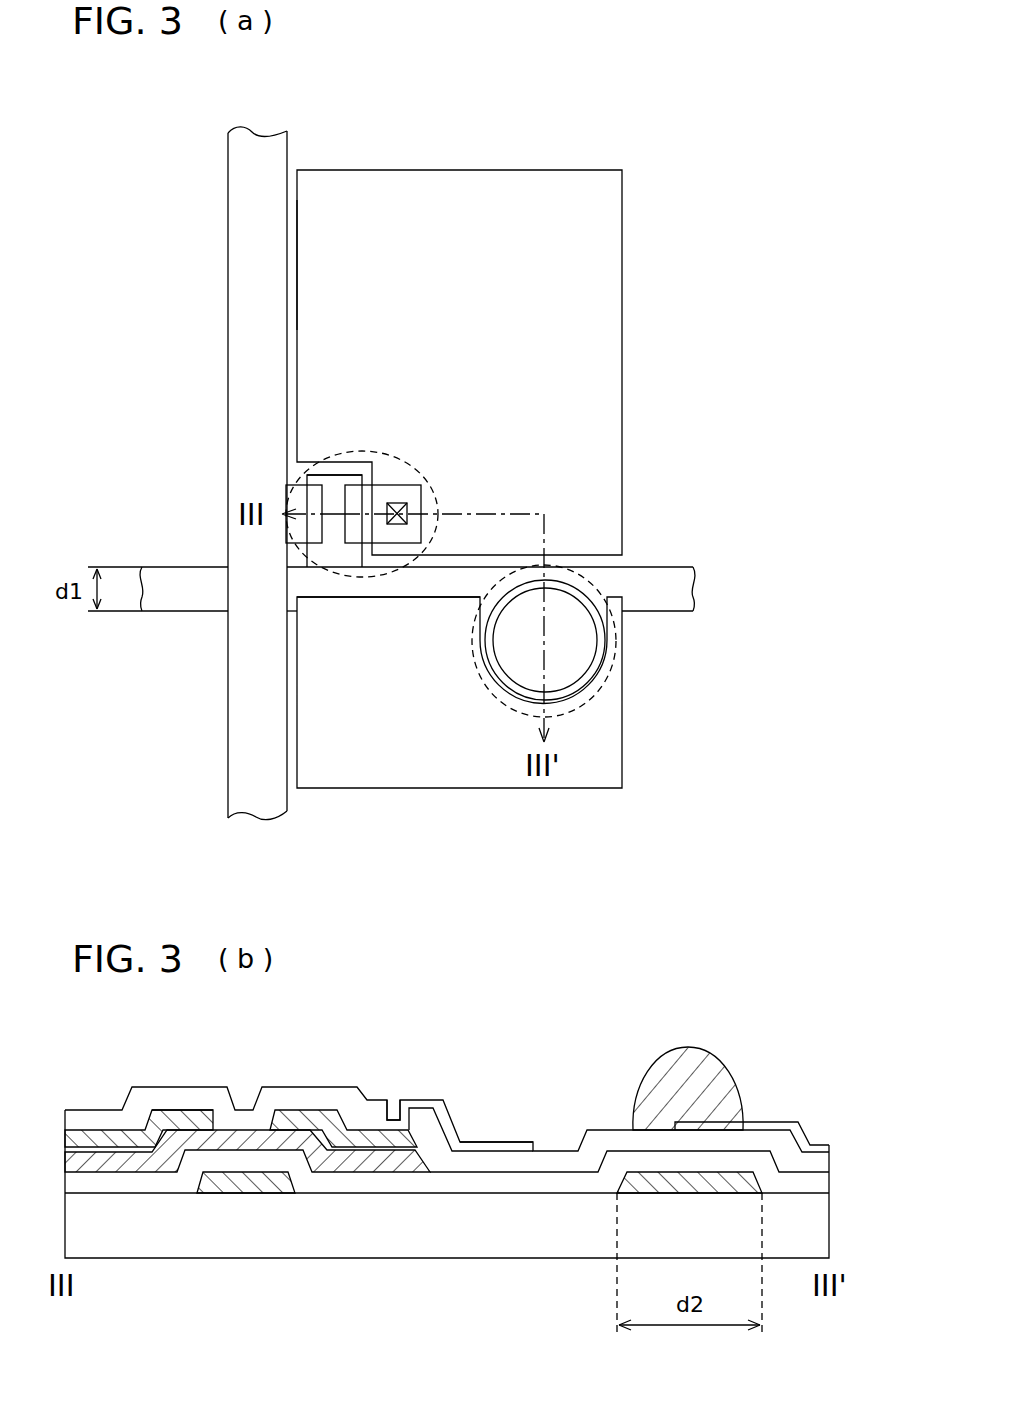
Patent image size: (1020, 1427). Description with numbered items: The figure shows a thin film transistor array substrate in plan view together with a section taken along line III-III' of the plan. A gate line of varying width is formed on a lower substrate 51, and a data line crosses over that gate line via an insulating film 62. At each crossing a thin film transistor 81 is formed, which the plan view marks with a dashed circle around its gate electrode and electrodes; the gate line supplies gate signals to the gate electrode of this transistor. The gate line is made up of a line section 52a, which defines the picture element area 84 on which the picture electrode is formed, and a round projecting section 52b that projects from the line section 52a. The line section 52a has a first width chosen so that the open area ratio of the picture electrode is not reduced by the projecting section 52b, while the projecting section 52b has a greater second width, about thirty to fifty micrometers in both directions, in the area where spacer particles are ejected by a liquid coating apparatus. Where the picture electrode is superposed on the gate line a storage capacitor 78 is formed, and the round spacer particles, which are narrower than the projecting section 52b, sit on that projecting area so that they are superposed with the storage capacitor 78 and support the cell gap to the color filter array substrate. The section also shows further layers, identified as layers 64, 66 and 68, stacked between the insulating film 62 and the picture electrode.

The lower substrate 51 is at (824, 1232).
The line section 52a is at (343, 612).
The projecting section 52b is at (578, 695).
The insulating film 62 is at (824, 1188).
The electrode layer 64 is at (400, 1170).
The interlayer insulating film 66 is at (420, 1123).
The insulating film 68 is at (824, 1162).
The storage capacitor 78 is at (592, 582).
The thin film transistor 81 is at (285, 494).
The picture element area 84 is at (292, 265).